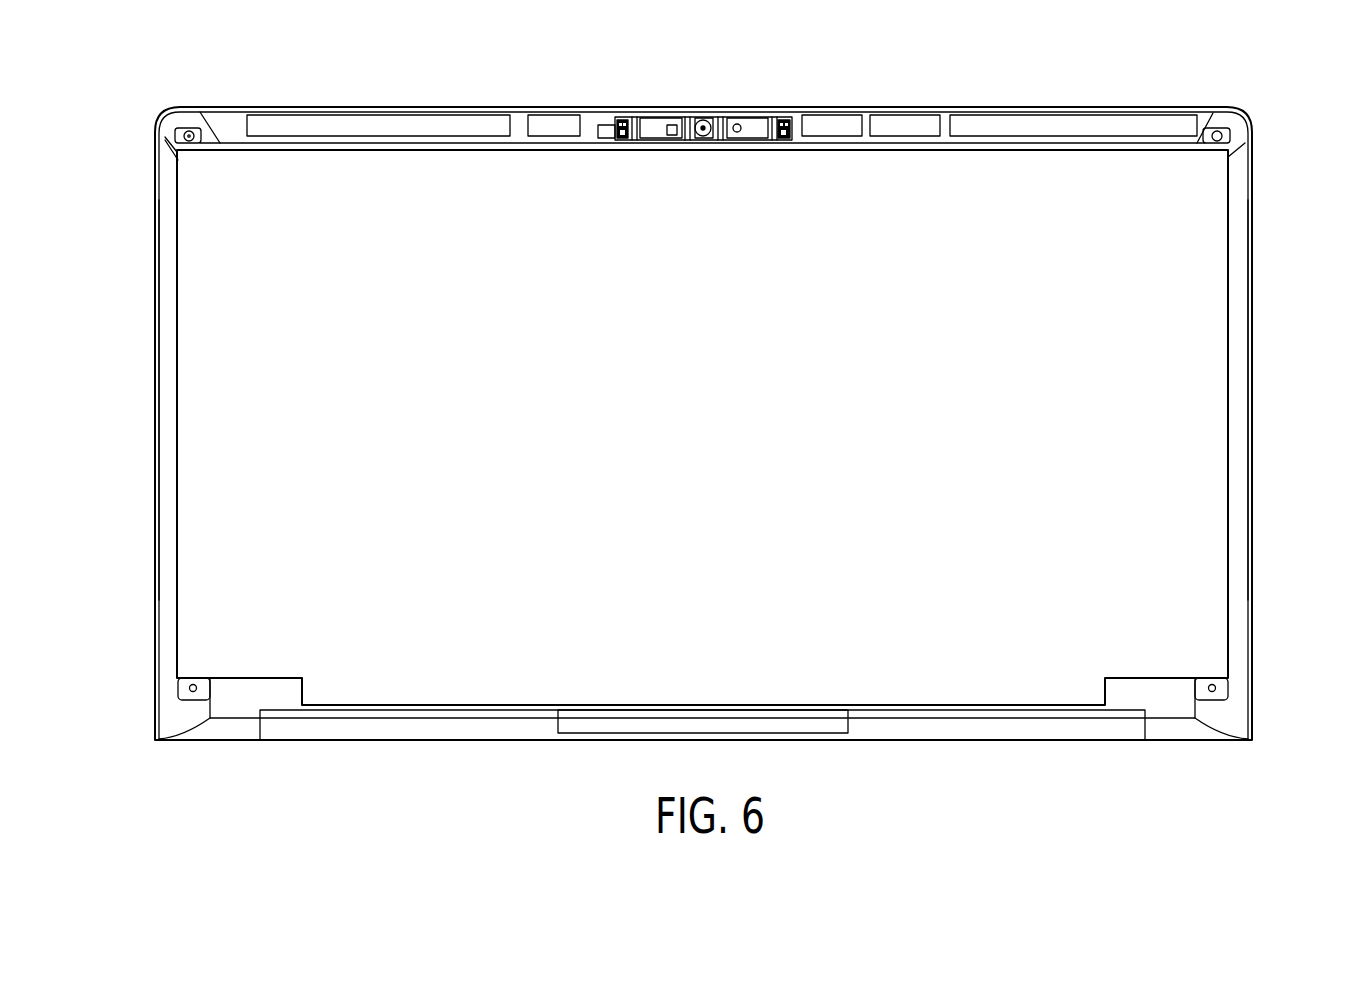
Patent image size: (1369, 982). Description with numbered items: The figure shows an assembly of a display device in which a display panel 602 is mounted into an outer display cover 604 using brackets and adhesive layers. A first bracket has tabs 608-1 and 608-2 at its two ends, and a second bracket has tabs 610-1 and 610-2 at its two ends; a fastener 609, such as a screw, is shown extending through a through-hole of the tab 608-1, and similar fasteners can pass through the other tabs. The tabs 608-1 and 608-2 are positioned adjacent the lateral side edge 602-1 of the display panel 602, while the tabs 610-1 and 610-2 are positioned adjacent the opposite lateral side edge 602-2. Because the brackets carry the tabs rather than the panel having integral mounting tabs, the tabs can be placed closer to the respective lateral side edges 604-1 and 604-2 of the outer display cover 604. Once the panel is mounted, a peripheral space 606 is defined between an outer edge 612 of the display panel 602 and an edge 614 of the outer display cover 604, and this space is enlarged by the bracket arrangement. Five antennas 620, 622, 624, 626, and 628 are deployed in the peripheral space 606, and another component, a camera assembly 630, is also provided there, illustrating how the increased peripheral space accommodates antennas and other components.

The display panel 602 is at (1185, 515).
The lateral side edge of the display panel 602-1 is at (177, 415).
The lateral side edge of the display panel 602-2 is at (1228, 283).
The outer display cover 604 is at (155, 692).
The lateral side edge of the outer display cover 604-1 is at (158, 483).
The lateral side edge of the outer display cover 604-2 is at (1250, 333).
The peripheral space 606 is at (594, 118).
The tab of the first bracket 608-1 is at (208, 150).
The tab of the first bracket 608-2 is at (210, 680).
The fastener 609 is at (183, 128).
The tab of the second bracket 610-1 is at (1230, 127).
The tab of the second bracket 610-2 is at (1230, 690).
The outer edge of the display panel 612 is at (232, 150).
The edge of the outer display cover 614 is at (342, 108).
The antenna 620 is at (416, 128).
The antenna 622 is at (542, 128).
The antenna 624 is at (826, 128).
The antenna 626 is at (900, 128).
The antenna 628 is at (1070, 128).
The camera assembly 630 is at (698, 118).